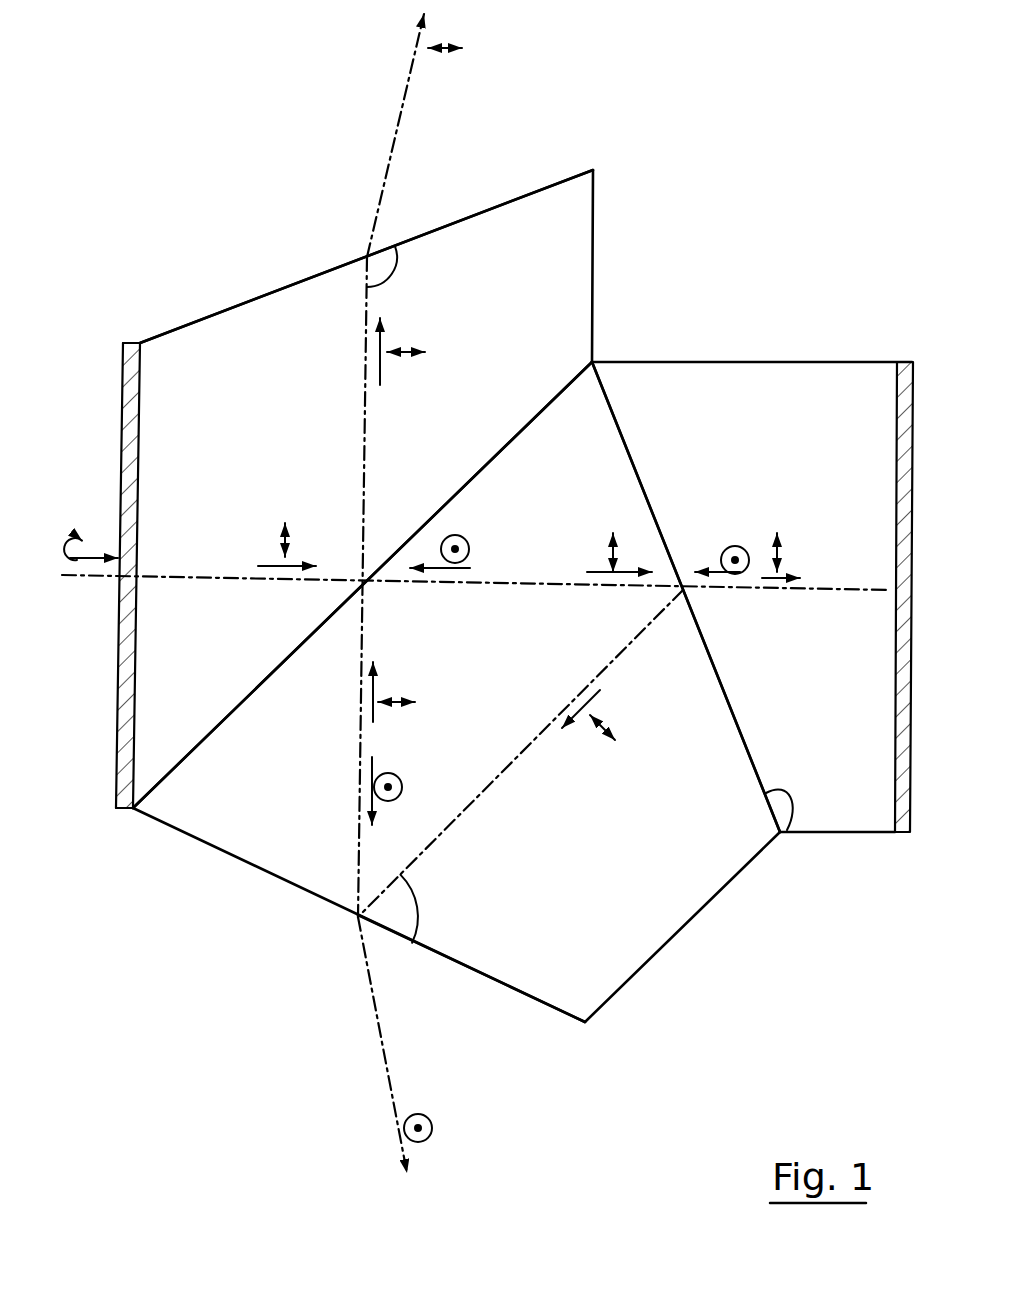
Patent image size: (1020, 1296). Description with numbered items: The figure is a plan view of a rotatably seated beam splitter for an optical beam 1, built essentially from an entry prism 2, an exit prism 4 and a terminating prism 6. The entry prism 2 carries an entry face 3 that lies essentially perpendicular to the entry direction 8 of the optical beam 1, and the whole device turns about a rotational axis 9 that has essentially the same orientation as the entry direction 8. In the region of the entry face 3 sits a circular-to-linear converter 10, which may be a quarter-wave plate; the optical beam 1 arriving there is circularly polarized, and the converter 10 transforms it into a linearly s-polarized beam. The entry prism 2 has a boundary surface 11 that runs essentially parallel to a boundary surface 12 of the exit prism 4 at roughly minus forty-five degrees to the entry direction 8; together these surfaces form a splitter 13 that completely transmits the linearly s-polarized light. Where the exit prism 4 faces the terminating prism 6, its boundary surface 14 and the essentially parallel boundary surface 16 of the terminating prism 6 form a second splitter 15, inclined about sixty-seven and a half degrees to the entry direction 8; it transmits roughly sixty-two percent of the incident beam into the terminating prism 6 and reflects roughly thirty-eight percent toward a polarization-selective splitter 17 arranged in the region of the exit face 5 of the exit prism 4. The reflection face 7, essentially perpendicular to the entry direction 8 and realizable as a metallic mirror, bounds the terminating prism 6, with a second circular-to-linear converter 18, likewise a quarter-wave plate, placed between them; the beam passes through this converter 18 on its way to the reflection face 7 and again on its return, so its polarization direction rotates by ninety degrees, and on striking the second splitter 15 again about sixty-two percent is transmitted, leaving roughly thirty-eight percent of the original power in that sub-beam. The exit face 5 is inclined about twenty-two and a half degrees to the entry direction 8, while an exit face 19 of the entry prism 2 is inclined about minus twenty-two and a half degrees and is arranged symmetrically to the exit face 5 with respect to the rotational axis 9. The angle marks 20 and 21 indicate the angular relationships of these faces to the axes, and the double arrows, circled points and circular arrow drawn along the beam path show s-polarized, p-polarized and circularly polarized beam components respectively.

The optical beam 1 is at (87, 580).
The entry prism 2 is at (198, 367).
The entry face 3 is at (120, 437).
The exit prism 4 is at (655, 915).
The exit face 5 is at (262, 875).
The terminating prism 6 is at (853, 810).
The reflection face 7 is at (910, 362).
The entry direction 8 is at (98, 555).
The rotational axis 9 is at (193, 577).
The circular-to-linear converter 10 is at (122, 367).
The boundary surface 11 is at (512, 435).
The boundary surface 12 is at (535, 417).
The splitter 13 is at (160, 780).
The boundary surface 14 is at (720, 683).
The second splitter 15 is at (780, 837).
The boundary surface 16 is at (708, 642).
The splitter 17 is at (503, 987).
The second circular-to-linear converter 18 is at (878, 365).
The exit face 19 is at (297, 283).
The angle of incidence 20 is at (392, 267).
The deflection angle 21 is at (388, 913).